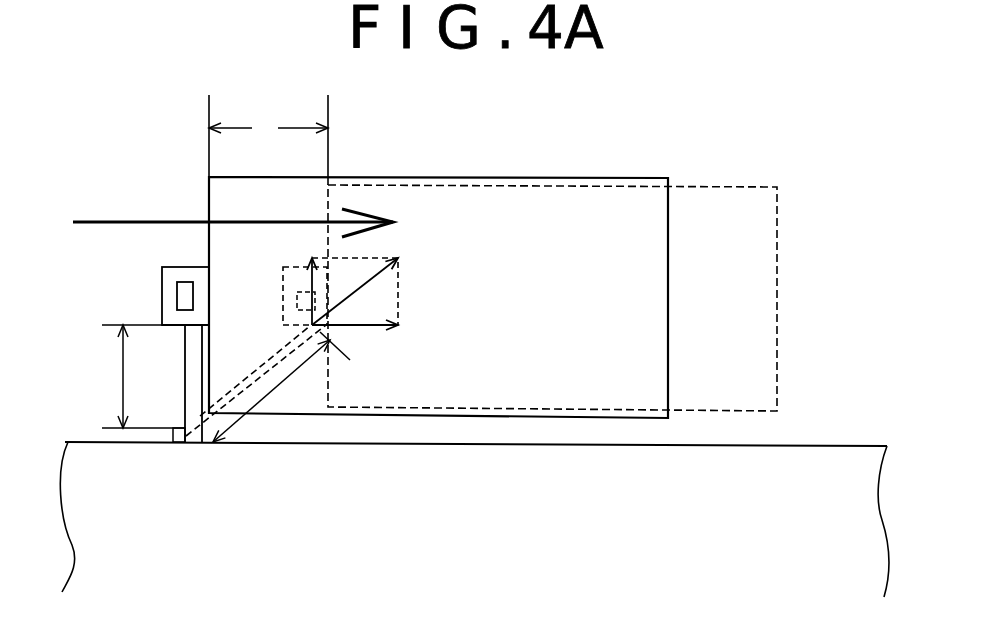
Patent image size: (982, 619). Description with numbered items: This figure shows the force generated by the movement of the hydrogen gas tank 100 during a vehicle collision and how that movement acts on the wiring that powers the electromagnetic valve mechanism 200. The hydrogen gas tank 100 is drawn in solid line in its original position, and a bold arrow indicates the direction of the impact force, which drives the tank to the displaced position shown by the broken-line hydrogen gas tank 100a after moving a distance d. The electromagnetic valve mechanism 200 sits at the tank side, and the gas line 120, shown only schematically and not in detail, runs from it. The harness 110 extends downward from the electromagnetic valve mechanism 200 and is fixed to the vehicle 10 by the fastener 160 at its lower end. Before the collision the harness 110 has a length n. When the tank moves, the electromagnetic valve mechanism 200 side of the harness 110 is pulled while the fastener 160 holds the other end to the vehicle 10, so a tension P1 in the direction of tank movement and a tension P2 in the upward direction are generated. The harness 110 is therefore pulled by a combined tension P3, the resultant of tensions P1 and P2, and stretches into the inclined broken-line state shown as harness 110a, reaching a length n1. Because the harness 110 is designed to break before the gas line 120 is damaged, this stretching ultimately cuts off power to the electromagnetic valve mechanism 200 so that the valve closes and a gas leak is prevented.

The vehicle 10 is at (842, 486).
The hydrogen gas tank 100 is at (612, 178).
The hydrogen gas tank (moved position) 100a is at (753, 187).
The electromagnetic valve mechanism 200 is at (172, 267).
The gas line 120 is at (177, 293).
The harness 110 is at (185, 390).
The harness (stretched state) 110a is at (253, 372).
The fastener 160 is at (173, 443).
The tension in the direction of tank movement P1 is at (358, 332).
The tension in the upward direction P2 is at (308, 268).
The combined tension P3 is at (362, 289).
The movement distance of the hydrogen gas tank d is at (268, 140).
The harness length before collision n is at (143, 376).
The stretched harness length n1 is at (281, 387).